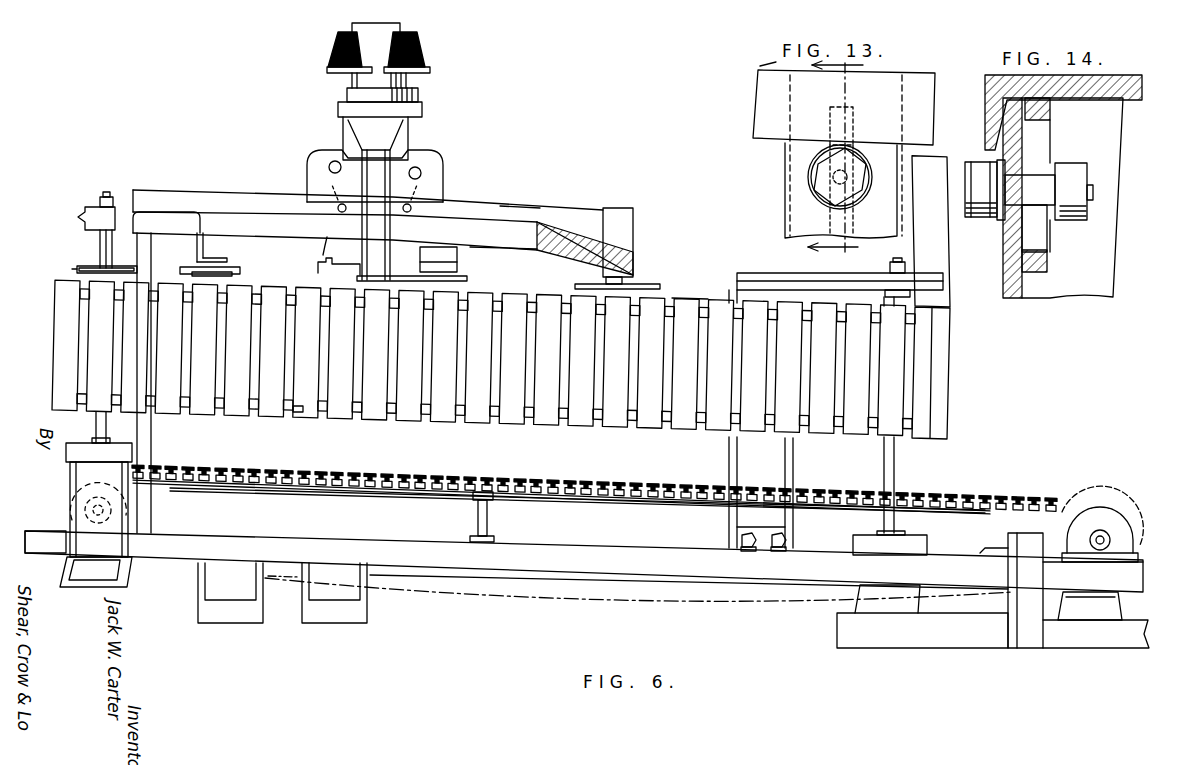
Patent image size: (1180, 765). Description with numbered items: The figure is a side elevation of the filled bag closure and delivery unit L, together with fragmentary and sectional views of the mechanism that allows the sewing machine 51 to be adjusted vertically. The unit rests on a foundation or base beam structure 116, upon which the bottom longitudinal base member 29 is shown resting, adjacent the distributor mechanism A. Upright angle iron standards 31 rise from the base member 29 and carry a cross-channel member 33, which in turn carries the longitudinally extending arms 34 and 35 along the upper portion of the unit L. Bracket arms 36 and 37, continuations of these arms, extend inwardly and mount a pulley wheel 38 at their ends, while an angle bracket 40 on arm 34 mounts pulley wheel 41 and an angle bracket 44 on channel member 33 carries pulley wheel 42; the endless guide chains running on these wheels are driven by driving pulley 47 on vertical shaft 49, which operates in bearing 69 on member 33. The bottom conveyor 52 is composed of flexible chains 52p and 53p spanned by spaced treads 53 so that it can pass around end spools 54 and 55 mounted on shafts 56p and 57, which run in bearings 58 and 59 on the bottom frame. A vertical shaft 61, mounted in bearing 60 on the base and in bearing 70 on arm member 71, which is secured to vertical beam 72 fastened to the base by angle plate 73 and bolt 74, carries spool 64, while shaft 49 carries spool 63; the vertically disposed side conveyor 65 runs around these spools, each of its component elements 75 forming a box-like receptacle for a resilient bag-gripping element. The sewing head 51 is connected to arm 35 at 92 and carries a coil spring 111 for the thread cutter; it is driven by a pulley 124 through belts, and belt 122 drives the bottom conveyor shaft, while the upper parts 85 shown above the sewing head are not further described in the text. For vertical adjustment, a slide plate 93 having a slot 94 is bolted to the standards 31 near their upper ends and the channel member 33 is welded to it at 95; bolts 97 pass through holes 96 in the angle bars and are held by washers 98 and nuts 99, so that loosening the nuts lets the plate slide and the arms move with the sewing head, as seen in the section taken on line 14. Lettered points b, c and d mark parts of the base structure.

In FIG. 6, the base member 29 is at (606, 570).
In FIG. 6, the upright angle iron standard 31 is at (153, 252).
In FIG. 13, the upright angle iron standard 31 is at (800, 213).
In FIG. 14, the upright angle iron standard 31 is at (1063, 198).
In FIG. 6, the cross-channel member 33 is at (140, 192).
In FIG. 13, the cross-channel member 33 is at (768, 98).
In FIG. 14, the cross-channel member 33 is at (1133, 98).
In FIG. 6, the longitudinally extending arm 34 is at (503, 240).
In FIG. 6, the longitudinally extending arm 35 is at (520, 210).
In FIG. 6, the bracket arm 36 is at (570, 255).
In FIG. 6, the bracket arm 37 is at (607, 208).
In FIG. 6, the pulley wheel 38 is at (636, 282).
In FIG. 6, the angle bracket 40 is at (450, 255).
In FIG. 6, the pulley wheel 41 is at (424, 282).
In FIG. 6, the pulley wheel 42 is at (218, 277).
In FIG. 6, the angle bracket 44 is at (206, 246).
In FIG. 6, the driving pulley 47 is at (82, 266).
In FIG. 6, the vertical shaft 49 is at (128, 258).
In FIG. 6, the sewing machine 51 is at (405, 193).
In FIG. 6, the bottom conveyor 52 is at (580, 498).
In FIG. 6, the flexible chain 52p is at (318, 272).
In FIG. 6, the conveyor tread 53 is at (365, 468).
In FIG. 6, the flexible chain 53p is at (306, 414).
In FIG. 6, the end roller or spool 54 is at (64, 492).
In FIG. 6, the end roller or spool 55 is at (1138, 533).
In FIG. 6, the shaft 56p is at (63, 544).
In FIG. 6, the shaft 57 is at (1093, 575).
In FIG. 6, the bearing 58 is at (1115, 548).
In FIG. 6, the bearing 59 is at (45, 530).
In FIG. 6, the bearing 60 is at (920, 552).
In FIG. 6, the vertical shaft 61 is at (896, 468).
In FIG. 6, the end roller or spool 63 is at (78, 277).
In FIG. 6, the end roller or spool 64 is at (940, 318).
In FIG. 6, the vertical side conveyor 65 is at (485, 420).
In FIG. 6, the bearing 69 is at (82, 215).
In FIG. 6, the bearing 70 is at (915, 280).
In FIG. 6, the arm member 71 is at (815, 280).
In FIG. 6, the vertical beam 72 is at (728, 464).
In FIG. 6, the angle plate 73 is at (762, 533).
In FIG. 6, the bolt 74 is at (782, 550).
In FIG. 6, the conveyor element 75 is at (585, 420).
In FIG. 6, the cones 85 is at (338, 50).
In FIG. 6, the connection 92 is at (412, 212).
In FIG. 14, the slide plate 93 is at (1045, 268).
In FIG. 14, the slot 94 is at (1038, 236).
In FIG. 14, the weld 95 is at (1052, 100).
In FIG. 14, the hole 96 is at (1010, 170).
In FIG. 13, the bolt 97 is at (872, 188).
In FIG. 14, the bolt 97 is at (986, 216).
In FIG. 13, the washer 98 is at (814, 175).
In FIG. 14, the washer 98 is at (1072, 218).
In FIG. 14, the nut 99 is at (1090, 193).
In FIG. 6, the coil spring 111 is at (339, 237).
In FIG. 6, the foundation or base beam structure 116 is at (310, 618).
In FIG. 6, the belt 122 is at (335, 190).
In FIG. 6, the pulley 124 is at (422, 160).
In FIG. 13, the section line 14 is at (811, 153).
In FIG. 6, the filled bag closure and delivery unit L is at (690, 292).
In FIG. 6, the distributor mechanism A is at (1120, 612).
In FIG. 6, the line b is at (850, 590).
In FIG. 6, the post c is at (1033, 540).
In FIG. 6, the bracket d is at (1005, 548).